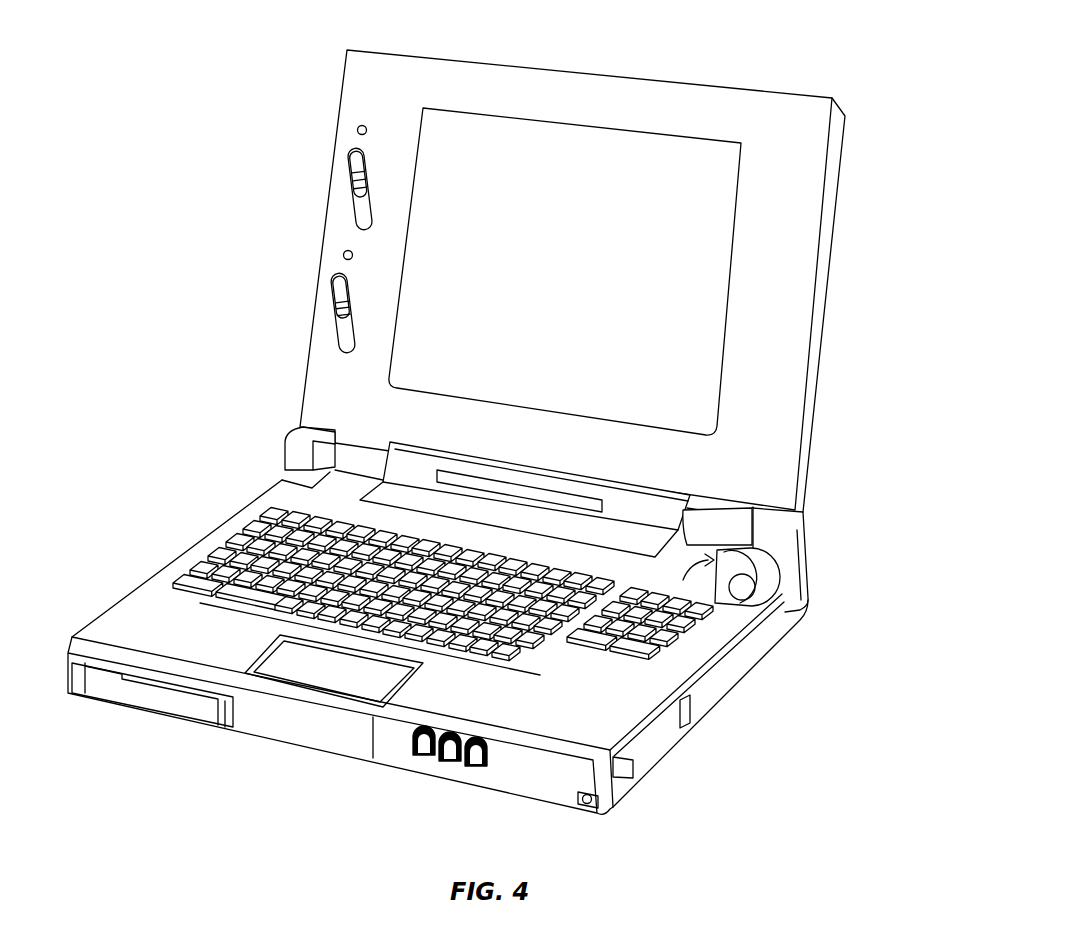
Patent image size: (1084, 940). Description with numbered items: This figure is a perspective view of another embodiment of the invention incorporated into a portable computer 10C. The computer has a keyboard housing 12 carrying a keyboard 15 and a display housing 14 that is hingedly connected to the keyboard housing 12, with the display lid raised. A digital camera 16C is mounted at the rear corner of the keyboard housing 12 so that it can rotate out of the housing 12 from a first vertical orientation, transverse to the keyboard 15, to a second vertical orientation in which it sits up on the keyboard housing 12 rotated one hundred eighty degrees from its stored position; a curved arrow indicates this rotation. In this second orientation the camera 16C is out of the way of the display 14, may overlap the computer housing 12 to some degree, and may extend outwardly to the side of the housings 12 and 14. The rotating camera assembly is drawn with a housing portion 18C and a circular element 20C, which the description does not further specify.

The portable computer 10C is at (510, 414).
The keyboard housing 12 is at (683, 662).
The display housing 14 is at (792, 350).
The keyboard 15 is at (470, 637).
The camera 16C is at (818, 543).
The hinge housing 18C is at (763, 577).
The rotary knob 20C is at (748, 592).